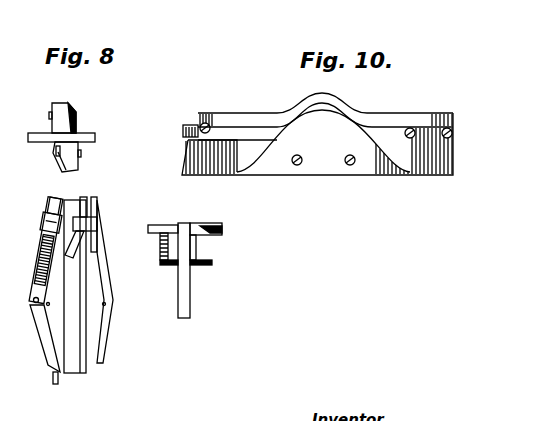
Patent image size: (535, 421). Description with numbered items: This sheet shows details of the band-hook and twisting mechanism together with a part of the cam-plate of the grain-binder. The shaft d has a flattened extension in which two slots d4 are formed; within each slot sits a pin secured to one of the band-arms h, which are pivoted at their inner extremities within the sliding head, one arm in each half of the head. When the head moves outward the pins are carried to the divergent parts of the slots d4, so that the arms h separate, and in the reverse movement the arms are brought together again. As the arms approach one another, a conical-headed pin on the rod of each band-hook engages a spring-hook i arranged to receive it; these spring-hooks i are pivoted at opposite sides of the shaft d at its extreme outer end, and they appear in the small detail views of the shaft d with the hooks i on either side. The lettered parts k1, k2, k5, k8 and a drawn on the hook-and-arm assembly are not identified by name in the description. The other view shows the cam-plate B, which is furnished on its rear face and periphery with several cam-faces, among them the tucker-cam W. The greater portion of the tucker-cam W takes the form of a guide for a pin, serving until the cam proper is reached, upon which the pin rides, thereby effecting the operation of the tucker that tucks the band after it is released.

In FIG. 8, the shaft d is at (95, 137).
In FIG. 8, the spring-hook i is at (80, 200).
In FIG. 8, the spring arm k' k1 is at (41, 262).
In FIG. 8, the bolt / pivot k2 is at (109, 188).
In FIG. 8, the pivot k5 is at (33, 300).
In FIG. 8, the cap k8 is at (55, 222).
In FIG. 8, the central member a is at (75, 286).
In FIG. 8, the band-arms h is at (71, 290).
In FIG. 8, the slots d4 is at (116, 310).
In FIG. 10, the cam-plate B is at (317, 142).
In FIG. 10, the tucker-cam W is at (325, 98).